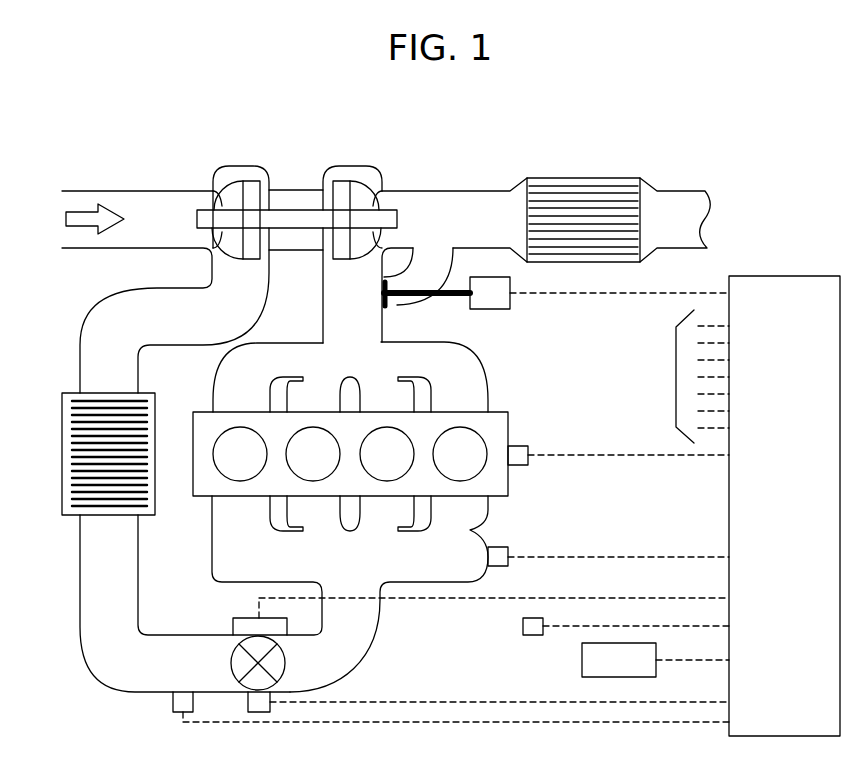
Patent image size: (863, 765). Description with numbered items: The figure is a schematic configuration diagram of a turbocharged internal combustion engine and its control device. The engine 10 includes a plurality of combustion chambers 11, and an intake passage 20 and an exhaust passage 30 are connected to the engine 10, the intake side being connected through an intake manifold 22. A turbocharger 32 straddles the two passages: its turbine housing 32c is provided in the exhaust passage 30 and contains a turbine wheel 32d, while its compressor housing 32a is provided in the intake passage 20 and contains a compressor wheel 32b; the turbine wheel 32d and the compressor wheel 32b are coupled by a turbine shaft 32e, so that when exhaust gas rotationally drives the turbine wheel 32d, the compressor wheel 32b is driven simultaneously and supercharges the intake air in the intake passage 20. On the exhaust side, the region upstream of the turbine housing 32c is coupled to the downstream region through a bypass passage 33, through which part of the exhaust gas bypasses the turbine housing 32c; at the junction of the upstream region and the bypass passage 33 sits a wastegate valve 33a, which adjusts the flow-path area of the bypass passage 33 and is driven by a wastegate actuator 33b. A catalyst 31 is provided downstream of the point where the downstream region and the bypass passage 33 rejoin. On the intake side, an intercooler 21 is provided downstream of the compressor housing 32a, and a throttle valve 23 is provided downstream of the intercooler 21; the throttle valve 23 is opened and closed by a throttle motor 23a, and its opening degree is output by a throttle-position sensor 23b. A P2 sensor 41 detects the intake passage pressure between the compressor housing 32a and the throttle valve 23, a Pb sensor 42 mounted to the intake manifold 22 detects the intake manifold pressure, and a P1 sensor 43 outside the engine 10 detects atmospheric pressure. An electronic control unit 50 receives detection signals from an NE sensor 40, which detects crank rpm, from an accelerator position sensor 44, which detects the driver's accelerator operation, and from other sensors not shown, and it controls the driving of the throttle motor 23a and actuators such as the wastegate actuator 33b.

The engine 10 is at (508, 496).
The combustion chambers 11 is at (483, 437).
The intake passage 20 is at (120, 191).
The intercooler 21 is at (62, 512).
The intake manifold 22 is at (212, 532).
The throttle valve 23 is at (286, 663).
The throttle motor 23a is at (233, 618).
The throttle-position sensor 23b is at (248, 708).
The exhaust passage 30 is at (447, 191).
The catalyst 31 is at (583, 178).
The turbocharger 32 is at (296, 190).
The compressor housing 32a is at (236, 167).
The compressor wheel 32b is at (207, 190).
The turbine housing 32c is at (352, 167).
The turbine wheel 32d is at (385, 191).
The turbine shaft 32e is at (312, 205).
The bypass passage 33 is at (455, 252).
The wastegate valve 33a is at (390, 303).
The wastegate actuator 33b is at (497, 309).
The NE sensor 40 is at (528, 460).
The P2 sensor 41 is at (172, 702).
The Pb sensor 42 is at (508, 566).
The P1 sensor 43 is at (523, 626).
The accelerator position sensor 44 is at (582, 660).
The electronic control unit 50 is at (778, 276).